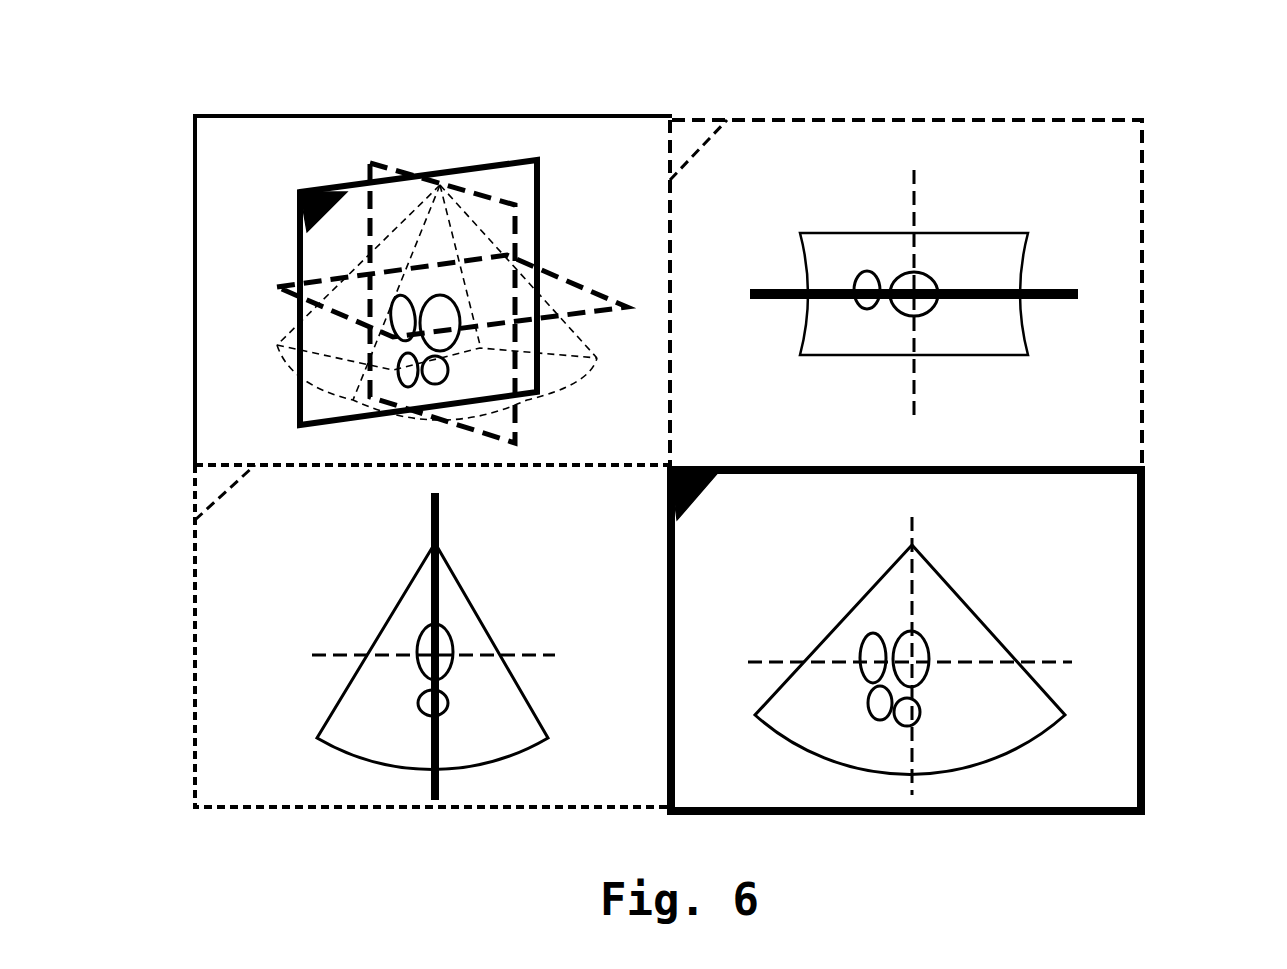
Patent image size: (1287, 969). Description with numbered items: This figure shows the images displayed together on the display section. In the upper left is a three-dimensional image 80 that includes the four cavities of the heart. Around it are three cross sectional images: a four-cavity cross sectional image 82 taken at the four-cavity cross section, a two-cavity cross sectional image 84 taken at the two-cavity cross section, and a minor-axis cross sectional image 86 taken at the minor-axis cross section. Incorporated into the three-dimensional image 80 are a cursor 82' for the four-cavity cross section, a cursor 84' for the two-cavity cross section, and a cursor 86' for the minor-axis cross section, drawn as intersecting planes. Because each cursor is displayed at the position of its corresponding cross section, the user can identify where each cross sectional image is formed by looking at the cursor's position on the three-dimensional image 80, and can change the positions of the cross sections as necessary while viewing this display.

The three-dimensional image 80 is at (220, 158).
The four-cavity cross sectional image 82 is at (958, 639).
The two-cavity cross sectional image 84 is at (389, 636).
The minor-axis cross sectional image 86 is at (906, 253).
The cursor for four-cavity cross section 82' is at (437, 232).
The cursor for two-cavity cross section 84' is at (442, 240).
The cursor for minor-axis cross section 86' is at (490, 193).